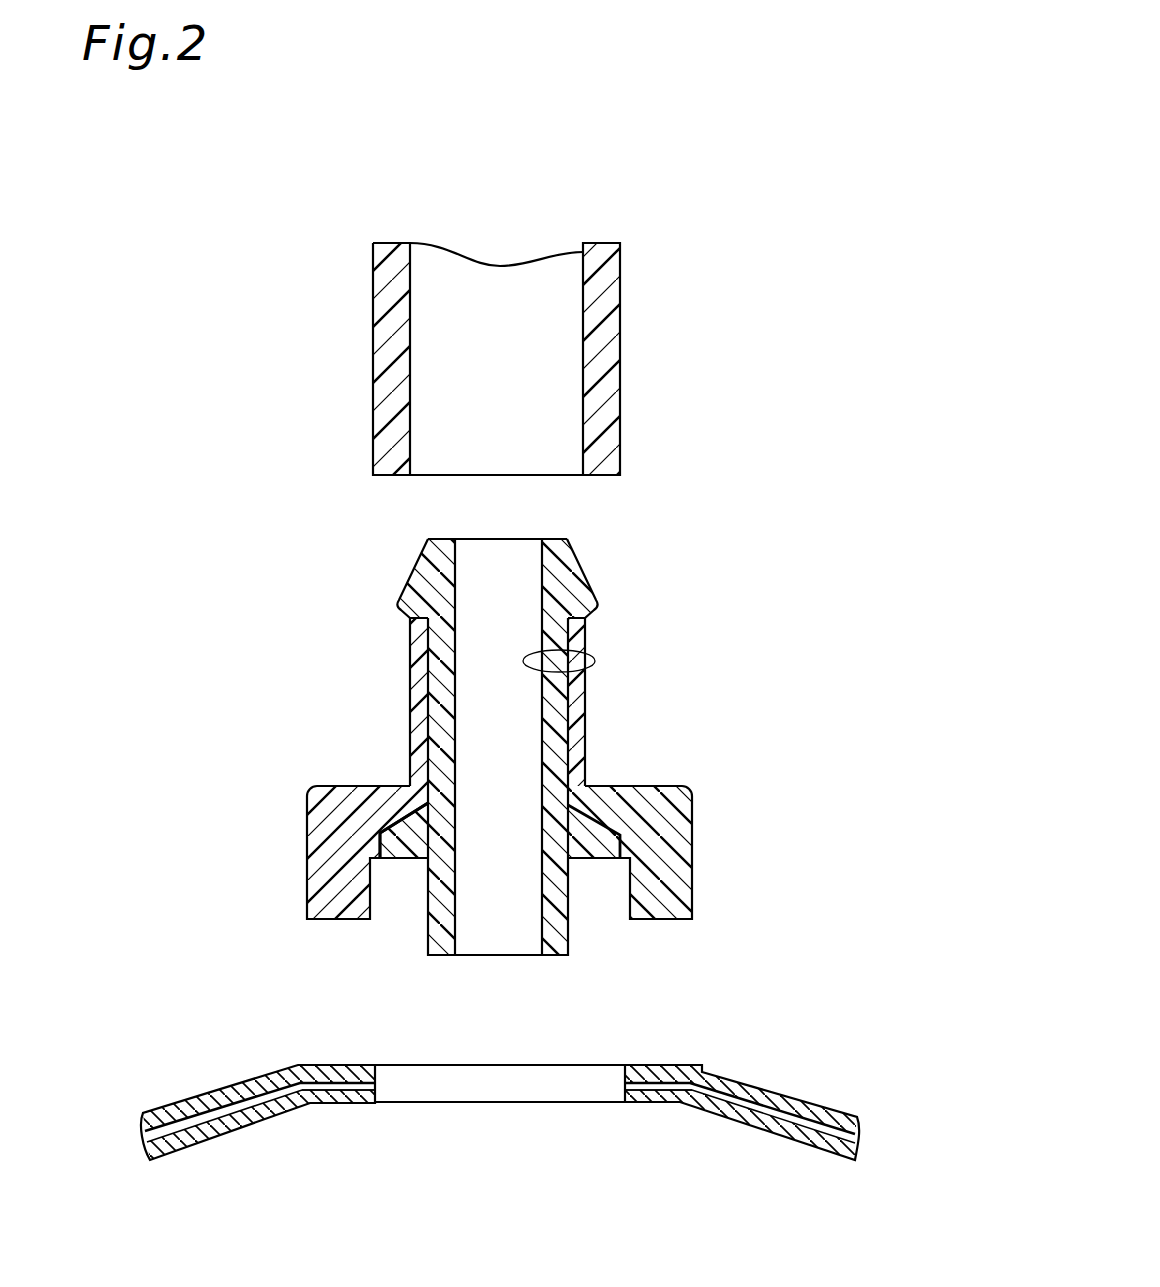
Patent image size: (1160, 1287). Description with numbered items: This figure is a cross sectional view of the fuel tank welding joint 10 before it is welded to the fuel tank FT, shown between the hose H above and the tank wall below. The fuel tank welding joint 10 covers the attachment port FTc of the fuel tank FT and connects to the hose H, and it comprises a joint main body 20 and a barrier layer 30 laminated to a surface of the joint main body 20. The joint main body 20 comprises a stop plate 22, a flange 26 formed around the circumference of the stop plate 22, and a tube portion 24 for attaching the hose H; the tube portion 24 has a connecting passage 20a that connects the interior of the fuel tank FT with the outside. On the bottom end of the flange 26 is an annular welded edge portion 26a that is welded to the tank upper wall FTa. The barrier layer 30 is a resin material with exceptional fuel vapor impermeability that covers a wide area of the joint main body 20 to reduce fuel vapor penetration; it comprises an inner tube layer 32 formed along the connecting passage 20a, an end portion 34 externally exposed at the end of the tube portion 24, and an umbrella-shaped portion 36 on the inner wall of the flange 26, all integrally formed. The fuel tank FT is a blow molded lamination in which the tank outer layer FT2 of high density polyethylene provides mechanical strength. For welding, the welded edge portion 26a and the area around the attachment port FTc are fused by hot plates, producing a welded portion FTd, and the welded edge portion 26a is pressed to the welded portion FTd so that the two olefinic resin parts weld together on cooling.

The hose H is at (607, 370).
The fuel tank welding joint 10 is at (729, 571).
The joint main body 20 is at (573, 747).
The connecting passage 20a is at (595, 660).
The stop plate 22 is at (638, 797).
The tube portion 24 is at (572, 712).
The flange 26 is at (692, 855).
The welded edge portion 26a is at (738, 899).
The barrier layer 30 is at (429, 698).
The inner tube layer 32 is at (413, 670).
The end portion 34 is at (410, 583).
The umbrella-shaped portion 36 is at (379, 785).
The fuel tank FT is at (556, 1091).
The tank upper wall FTa is at (820, 1103).
The tank outer layer FT2 is at (737, 1078).
The welded portion FTd is at (672, 1063).
The attachment port FTc is at (625, 1078).